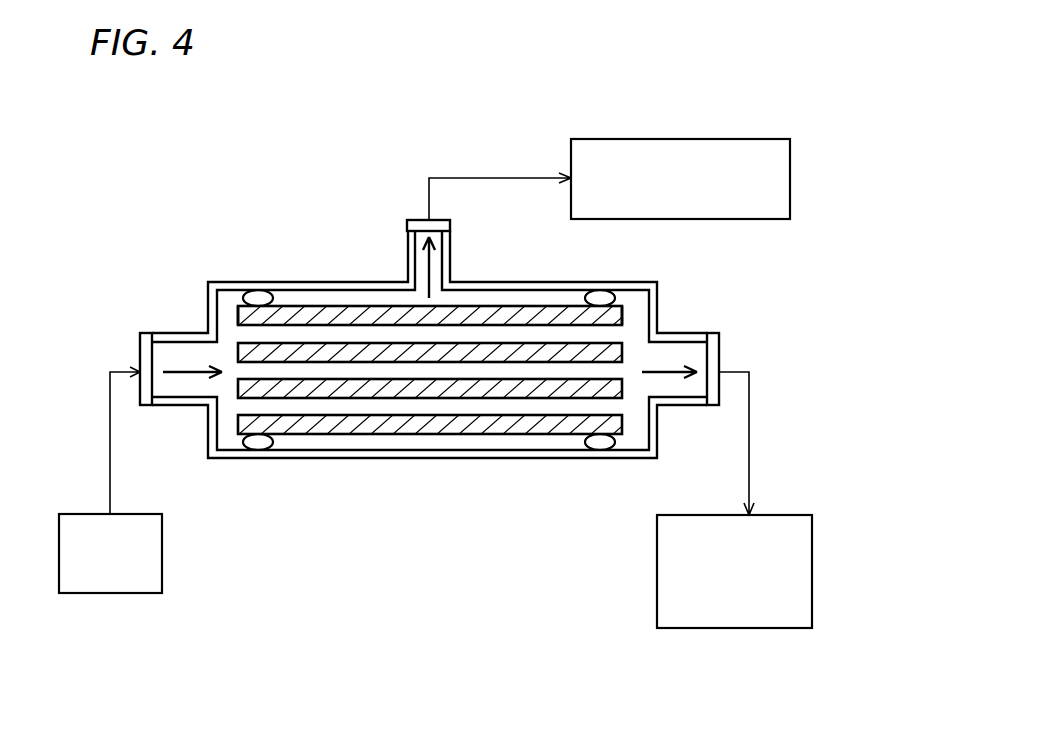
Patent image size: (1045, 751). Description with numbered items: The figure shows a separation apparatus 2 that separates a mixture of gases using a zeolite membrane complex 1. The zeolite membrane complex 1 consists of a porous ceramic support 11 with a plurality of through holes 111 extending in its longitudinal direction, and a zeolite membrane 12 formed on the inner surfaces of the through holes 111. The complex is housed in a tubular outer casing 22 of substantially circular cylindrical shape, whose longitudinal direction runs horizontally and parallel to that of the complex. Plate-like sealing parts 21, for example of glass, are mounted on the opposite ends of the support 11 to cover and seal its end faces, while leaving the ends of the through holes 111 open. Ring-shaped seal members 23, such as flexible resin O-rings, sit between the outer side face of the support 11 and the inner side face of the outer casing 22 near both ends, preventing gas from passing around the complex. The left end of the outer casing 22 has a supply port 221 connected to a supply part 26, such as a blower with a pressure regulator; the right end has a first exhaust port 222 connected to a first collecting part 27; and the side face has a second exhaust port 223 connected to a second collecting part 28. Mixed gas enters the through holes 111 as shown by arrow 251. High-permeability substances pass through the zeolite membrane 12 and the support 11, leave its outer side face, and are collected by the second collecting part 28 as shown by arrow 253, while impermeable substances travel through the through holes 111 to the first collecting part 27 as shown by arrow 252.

The zeolite membrane complex 1 is at (232, 436).
The support 11 is at (503, 433).
The zeolite membrane 12 is at (410, 365).
The through holes 111 is at (308, 375).
The separation apparatus 2 is at (165, 163).
The sealing parts 21 is at (238, 320).
The outer casing 22 is at (524, 282).
The supply port 221 is at (165, 342).
The first exhaust port 222 is at (693, 342).
The second exhaust port 223 is at (418, 243).
The seal members 23 is at (258, 297).
The arrow 251 is at (174, 375).
The arrow 252 is at (672, 378).
The arrow 253 is at (427, 270).
The supply part 26 is at (162, 553).
The first collecting part 27 is at (657, 572).
The second collecting part 28 is at (682, 139).